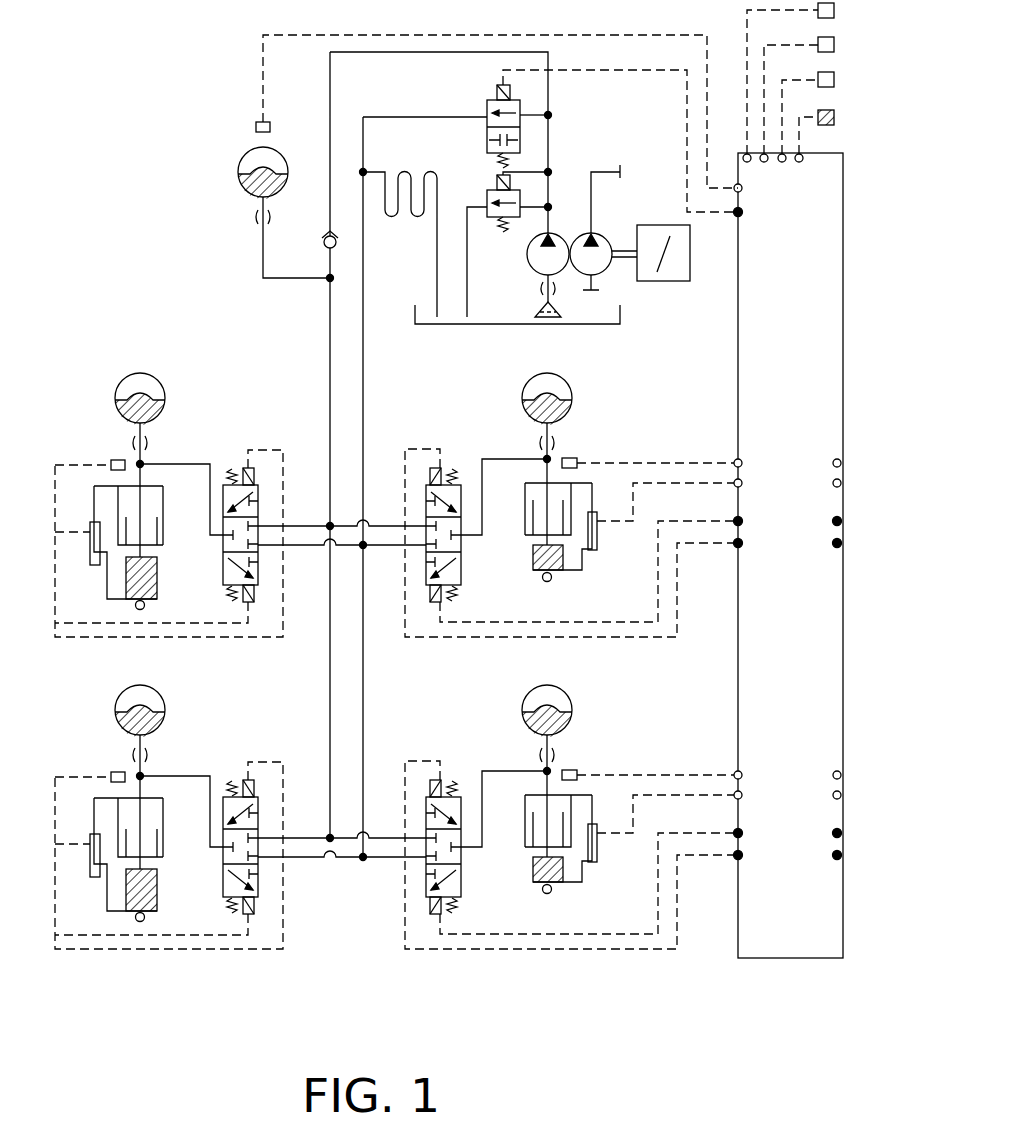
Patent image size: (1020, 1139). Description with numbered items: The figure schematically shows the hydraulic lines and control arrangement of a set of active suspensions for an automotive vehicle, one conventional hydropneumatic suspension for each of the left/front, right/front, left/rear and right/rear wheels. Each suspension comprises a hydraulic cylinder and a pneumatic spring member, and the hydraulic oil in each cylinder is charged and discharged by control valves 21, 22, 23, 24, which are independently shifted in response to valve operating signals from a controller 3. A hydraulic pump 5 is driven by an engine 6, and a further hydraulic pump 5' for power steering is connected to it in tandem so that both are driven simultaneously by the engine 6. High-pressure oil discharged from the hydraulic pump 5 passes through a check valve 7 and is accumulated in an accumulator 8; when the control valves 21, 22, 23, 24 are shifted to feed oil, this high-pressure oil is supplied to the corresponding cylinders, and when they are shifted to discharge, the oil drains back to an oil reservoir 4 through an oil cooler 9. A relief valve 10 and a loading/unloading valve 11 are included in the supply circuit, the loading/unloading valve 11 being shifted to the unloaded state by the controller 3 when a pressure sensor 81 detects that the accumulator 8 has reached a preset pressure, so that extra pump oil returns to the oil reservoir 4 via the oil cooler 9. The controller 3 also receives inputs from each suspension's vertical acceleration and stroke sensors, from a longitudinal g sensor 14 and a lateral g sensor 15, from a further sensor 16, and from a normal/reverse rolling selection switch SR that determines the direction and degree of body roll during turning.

The controller 3 is at (843, 365).
The oil reservoir 4 is at (492, 325).
The hydraulic pump 5 is at (531, 275).
The hydraulic pump 5' is at (603, 227).
The engine 6 is at (668, 283).
The check valve 7 is at (323, 243).
The accumulator 8 is at (243, 187).
The pressure sensor 81 is at (256, 128).
The oil cooler 9 is at (397, 220).
The relief valve 10 is at (487, 203).
The loading/unloading valve 11 is at (520, 135).
The longitudinal g sensor 14 is at (834, 80).
The lateral g sensor 15 is at (834, 45).
The sensor 16 is at (834, 10).
The normal/reverse rolling selection switch SR is at (834, 117).
The control valve 21 is at (248, 497).
The control valve 22 is at (428, 498).
The control valve 23 is at (186, 855).
The control valve 24 is at (552, 855).